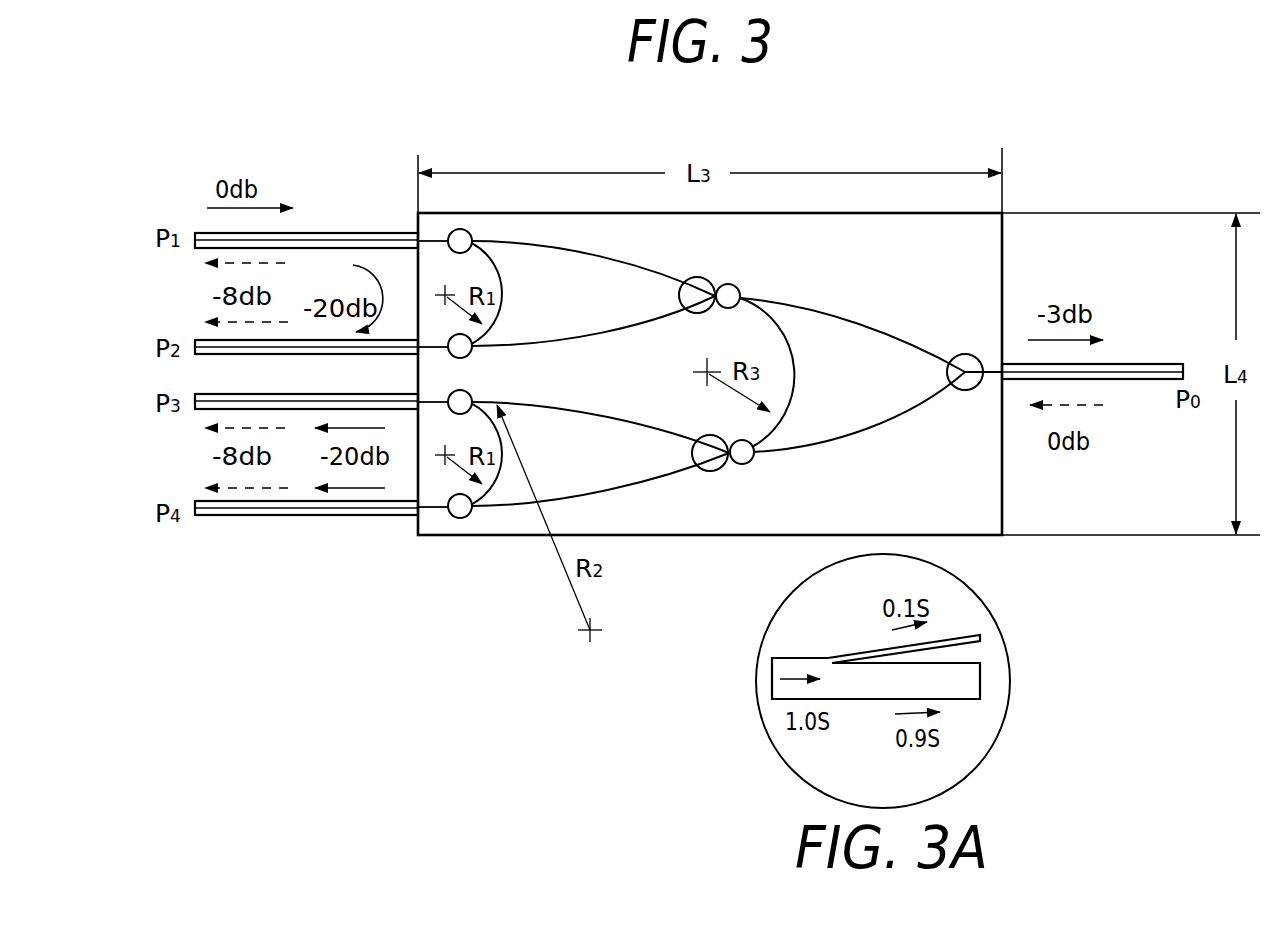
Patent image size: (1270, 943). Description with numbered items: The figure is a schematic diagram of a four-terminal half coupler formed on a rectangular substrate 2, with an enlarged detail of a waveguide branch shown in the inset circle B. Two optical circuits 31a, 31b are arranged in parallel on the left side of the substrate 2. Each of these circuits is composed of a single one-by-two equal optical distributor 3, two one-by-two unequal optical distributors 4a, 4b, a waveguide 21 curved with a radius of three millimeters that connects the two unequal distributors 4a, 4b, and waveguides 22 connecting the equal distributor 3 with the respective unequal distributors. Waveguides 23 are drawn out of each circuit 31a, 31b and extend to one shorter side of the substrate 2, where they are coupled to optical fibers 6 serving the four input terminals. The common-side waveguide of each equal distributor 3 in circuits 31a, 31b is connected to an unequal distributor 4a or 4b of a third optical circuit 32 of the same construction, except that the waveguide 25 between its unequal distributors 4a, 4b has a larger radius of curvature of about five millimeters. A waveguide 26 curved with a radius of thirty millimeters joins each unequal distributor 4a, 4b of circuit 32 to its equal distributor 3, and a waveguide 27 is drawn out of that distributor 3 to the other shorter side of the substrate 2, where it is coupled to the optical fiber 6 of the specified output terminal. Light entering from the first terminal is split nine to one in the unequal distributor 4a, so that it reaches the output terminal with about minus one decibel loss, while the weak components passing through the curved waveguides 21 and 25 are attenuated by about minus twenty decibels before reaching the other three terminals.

In FIG. 3, the rectangular substrate 2 is at (940, 222).
In FIG. 3, the 1×2 equal optical distributor 3 is at (704, 279).
In FIG. 3, the 1×2 unequal optical distributor 4a is at (471, 231).
In FIG. 3, the 1×2 unequal optical distributor 4b is at (472, 353).
In FIG. 3, the optical fiber 6 is at (330, 233).
In FIG. 3, the waveguide 21 is at (514, 265).
In FIG. 3, the waveguide 22 is at (612, 257).
In FIG. 3, the waveguide 23 is at (437, 240).
In FIG. 3, the waveguide 25 is at (797, 371).
In FIG. 3, the waveguide 26 is at (830, 313).
In FIG. 3, the waveguide 27 is at (977, 357).
In FIG. 3, the optical circuit 31a is at (638, 298).
In FIG. 3, the optical circuit 31b is at (650, 453).
In FIG. 3, the optical circuit 32 is at (911, 387).
In FIG. 3A, the detail region B is at (1004, 726).